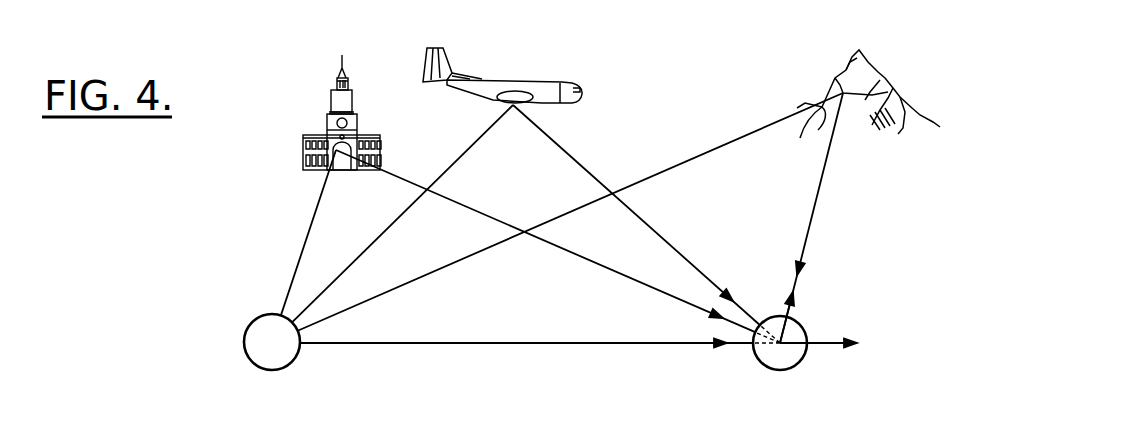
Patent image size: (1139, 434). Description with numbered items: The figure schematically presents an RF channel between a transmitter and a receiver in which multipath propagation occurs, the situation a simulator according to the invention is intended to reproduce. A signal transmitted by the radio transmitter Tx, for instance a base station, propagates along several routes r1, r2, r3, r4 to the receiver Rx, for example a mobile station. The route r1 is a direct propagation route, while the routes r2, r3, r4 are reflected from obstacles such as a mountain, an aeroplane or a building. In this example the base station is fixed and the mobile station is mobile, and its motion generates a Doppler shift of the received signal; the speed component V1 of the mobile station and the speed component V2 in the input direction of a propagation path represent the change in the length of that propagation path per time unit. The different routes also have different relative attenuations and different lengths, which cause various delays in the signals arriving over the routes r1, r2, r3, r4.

The direct propagation route r1 is at (526, 331).
The reflected propagation route r2 is at (570, 218).
The reflected propagation route r3 is at (526, 215).
The reflected propagation route r4 is at (518, 241).
The speed component of the mobile station V1 is at (829, 366).
The speed component of the mobile station V2 is at (806, 304).
The radio transmitter Tx is at (280, 357).
The receiver Rx is at (798, 357).